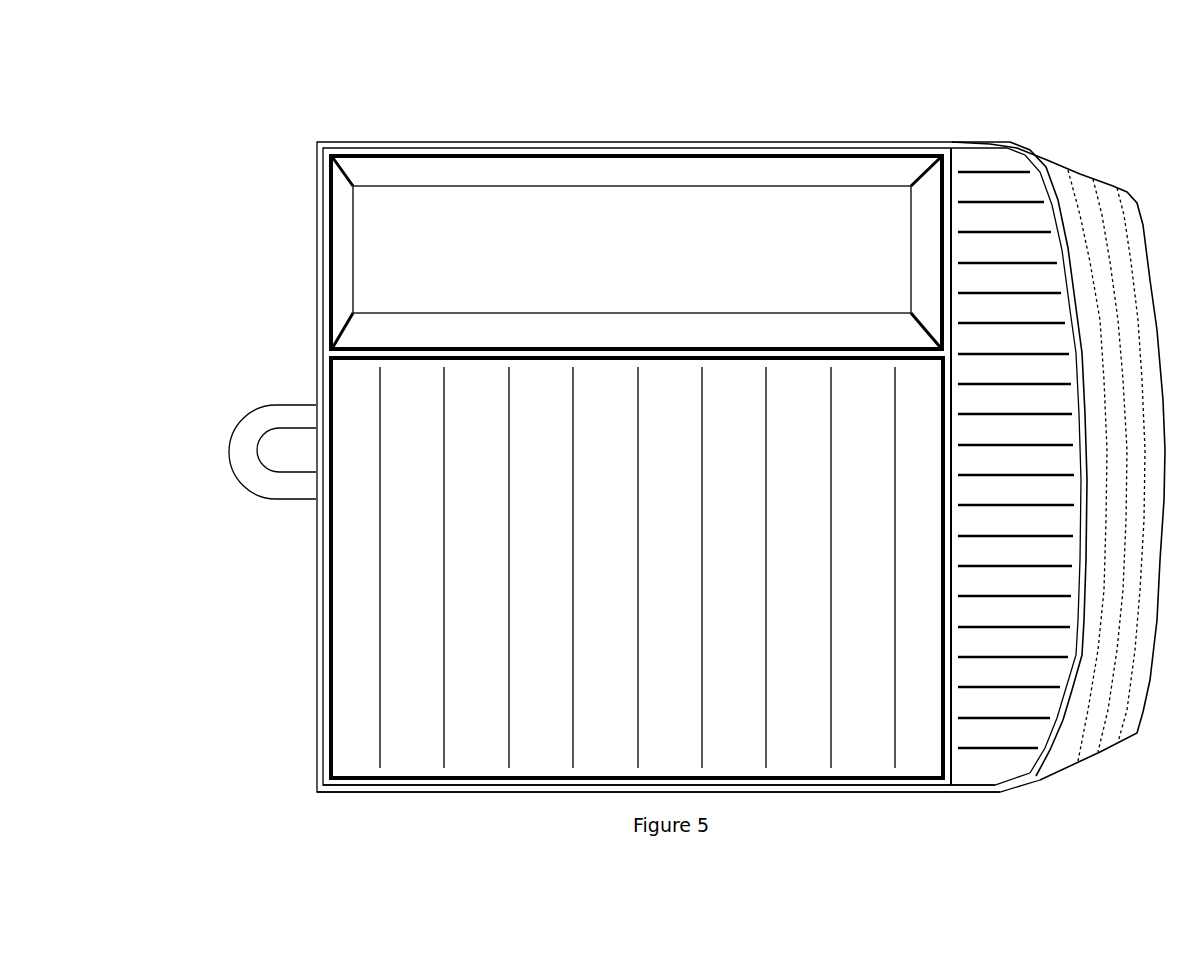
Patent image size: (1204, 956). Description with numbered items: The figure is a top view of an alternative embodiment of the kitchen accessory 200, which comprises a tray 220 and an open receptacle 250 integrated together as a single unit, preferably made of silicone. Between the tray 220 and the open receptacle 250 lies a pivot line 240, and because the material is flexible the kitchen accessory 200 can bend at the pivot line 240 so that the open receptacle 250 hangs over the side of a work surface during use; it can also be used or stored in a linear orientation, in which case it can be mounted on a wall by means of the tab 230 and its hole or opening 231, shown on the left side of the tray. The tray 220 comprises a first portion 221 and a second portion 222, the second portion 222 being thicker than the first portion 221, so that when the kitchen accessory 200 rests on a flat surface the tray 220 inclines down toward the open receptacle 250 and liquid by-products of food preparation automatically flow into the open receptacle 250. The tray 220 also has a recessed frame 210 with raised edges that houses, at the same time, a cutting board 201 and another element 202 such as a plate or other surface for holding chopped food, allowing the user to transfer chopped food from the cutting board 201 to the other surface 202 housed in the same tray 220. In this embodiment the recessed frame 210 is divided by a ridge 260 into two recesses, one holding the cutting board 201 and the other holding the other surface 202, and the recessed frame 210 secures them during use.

The kitchen accessory 200 is at (232, 108).
The cutting board 201 is at (632, 178).
The other element 202 is at (458, 752).
The recessed frame 210 is at (572, 787).
The tray 220 is at (730, 784).
The first portion 221 is at (845, 784).
The second portion 222 is at (363, 787).
The tab 230 is at (250, 487).
The hole or opening 231 is at (262, 442).
The pivot line 240 is at (950, 172).
The open receptacle 250 is at (1150, 295).
The ridge 260 is at (335, 353).